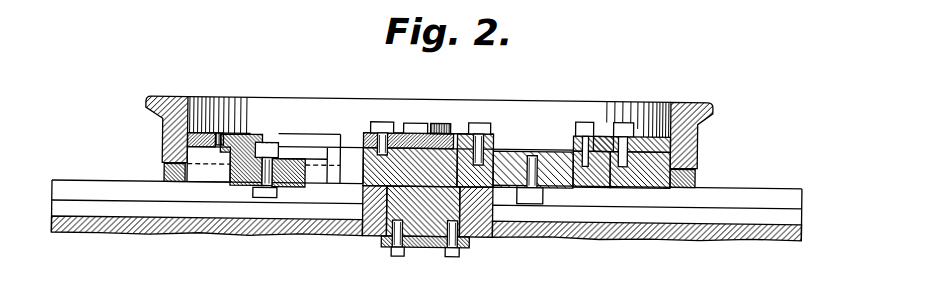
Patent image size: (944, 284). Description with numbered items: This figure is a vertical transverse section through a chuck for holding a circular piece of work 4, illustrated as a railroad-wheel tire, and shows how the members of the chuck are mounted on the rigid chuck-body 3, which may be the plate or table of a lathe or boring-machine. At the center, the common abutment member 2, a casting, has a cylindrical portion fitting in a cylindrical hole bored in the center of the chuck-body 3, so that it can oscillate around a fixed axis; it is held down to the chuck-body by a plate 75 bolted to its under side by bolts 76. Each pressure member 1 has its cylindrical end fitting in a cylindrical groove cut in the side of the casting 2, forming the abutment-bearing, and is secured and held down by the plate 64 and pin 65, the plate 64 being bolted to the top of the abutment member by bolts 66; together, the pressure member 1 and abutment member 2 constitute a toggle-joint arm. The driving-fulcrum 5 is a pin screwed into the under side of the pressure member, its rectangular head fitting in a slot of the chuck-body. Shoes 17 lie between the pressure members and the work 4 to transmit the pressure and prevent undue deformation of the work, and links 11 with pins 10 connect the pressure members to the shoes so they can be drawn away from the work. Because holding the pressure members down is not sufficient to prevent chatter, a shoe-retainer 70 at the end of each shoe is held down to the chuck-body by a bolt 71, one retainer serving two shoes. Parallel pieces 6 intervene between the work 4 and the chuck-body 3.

The pressure member 1 is at (513, 145).
The abutment member 2 is at (420, 128).
The chuck-body 3 is at (200, 237).
The work 4 is at (172, 95).
The driving-fulcrum 5 is at (523, 199).
The parallel pieces 6 is at (164, 170).
The pins 10 is at (583, 116).
The links 11 is at (612, 128).
The shoes 17 is at (650, 262).
The plate 64 is at (353, 129).
The pin 65 is at (478, 118).
The bolts 66 is at (389, 128).
The shoe-retainer 70 is at (242, 131).
The bolt 71 is at (268, 139).
The plate 75 is at (385, 243).
The bolts 76 is at (396, 253).